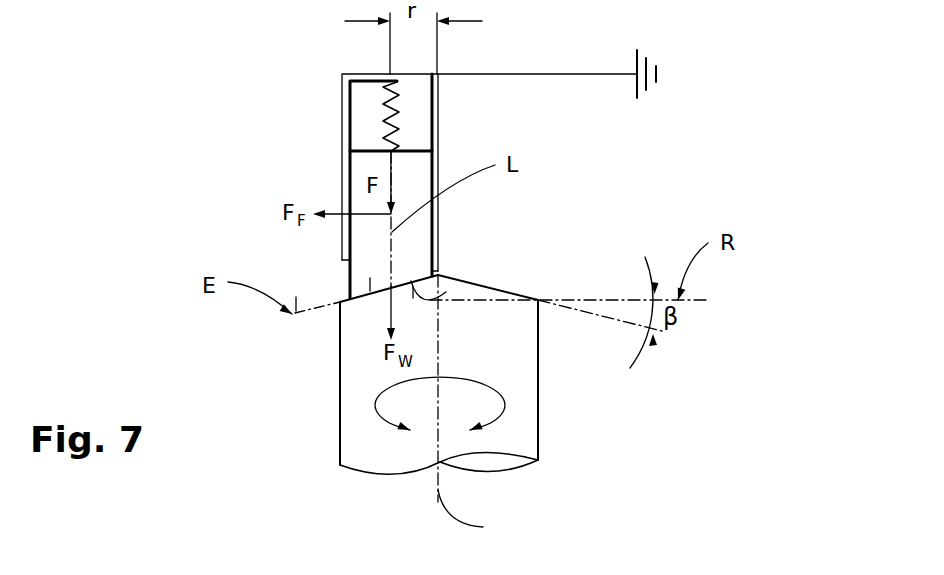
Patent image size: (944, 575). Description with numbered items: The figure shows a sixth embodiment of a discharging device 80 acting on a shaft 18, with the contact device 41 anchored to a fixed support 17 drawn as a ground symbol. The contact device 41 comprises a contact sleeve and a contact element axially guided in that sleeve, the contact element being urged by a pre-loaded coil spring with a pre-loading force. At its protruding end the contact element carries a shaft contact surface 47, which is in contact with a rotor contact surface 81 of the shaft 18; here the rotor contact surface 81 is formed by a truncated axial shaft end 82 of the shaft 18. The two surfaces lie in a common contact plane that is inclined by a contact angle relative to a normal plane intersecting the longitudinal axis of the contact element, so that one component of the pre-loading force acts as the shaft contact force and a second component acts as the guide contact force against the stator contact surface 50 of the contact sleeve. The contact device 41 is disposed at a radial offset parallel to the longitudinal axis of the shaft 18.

The fixed support / ground 17 is at (662, 65).
The contact device 41 is at (340, 178).
The stator contact surface 50 is at (372, 150).
The discharging device 80 is at (562, 200).
The rotor contact surface 81 is at (362, 293).
The truncated axial shaft end 82 is at (518, 282).
The shaft contact surface 47 is at (460, 277).
The shaft 18 is at (517, 428).